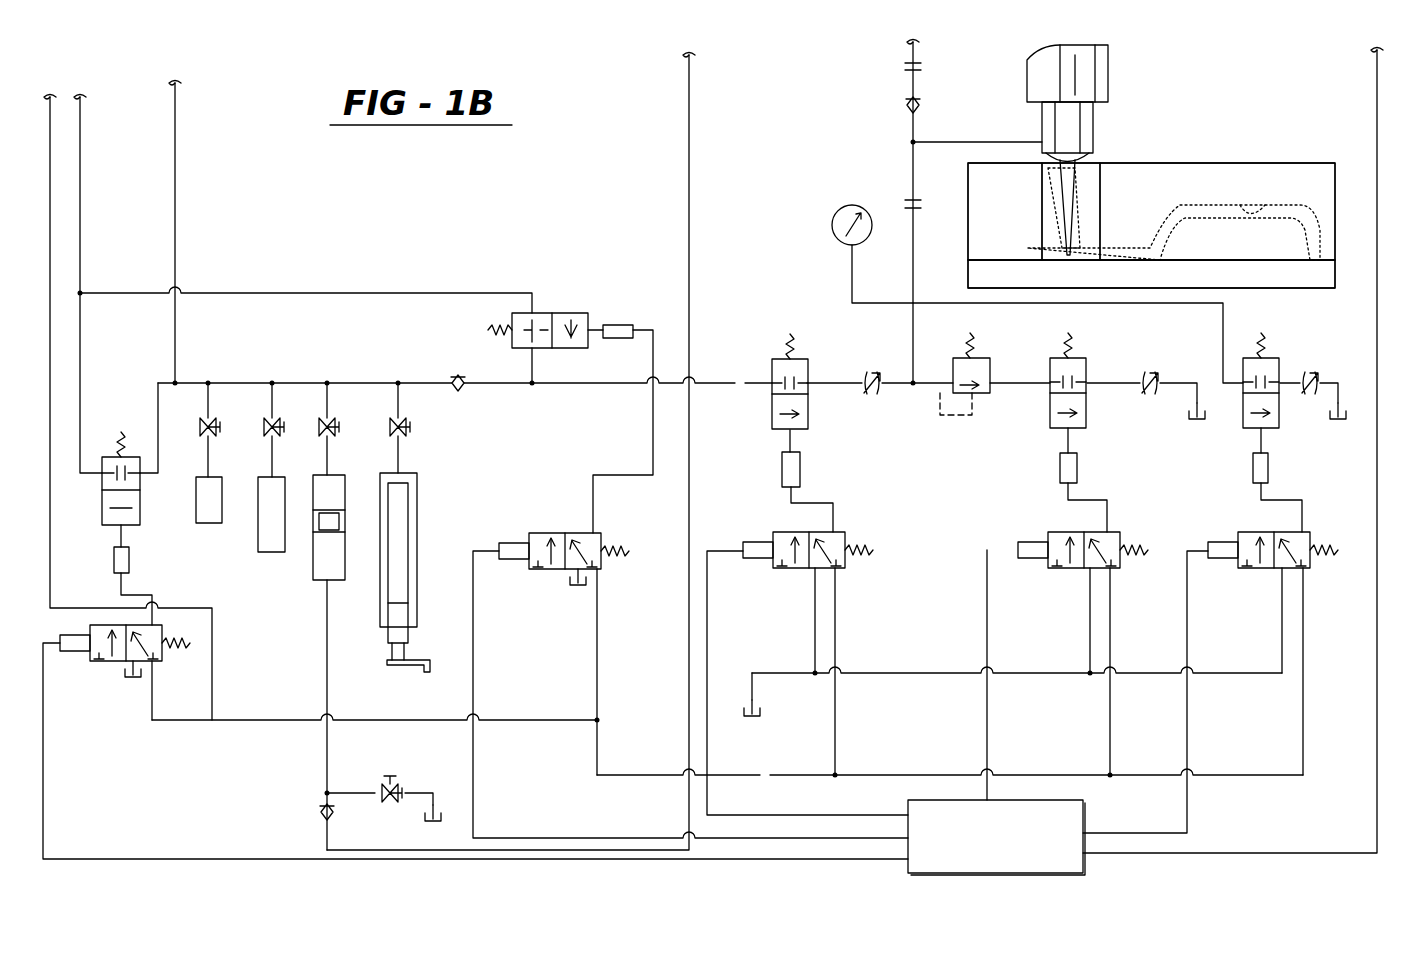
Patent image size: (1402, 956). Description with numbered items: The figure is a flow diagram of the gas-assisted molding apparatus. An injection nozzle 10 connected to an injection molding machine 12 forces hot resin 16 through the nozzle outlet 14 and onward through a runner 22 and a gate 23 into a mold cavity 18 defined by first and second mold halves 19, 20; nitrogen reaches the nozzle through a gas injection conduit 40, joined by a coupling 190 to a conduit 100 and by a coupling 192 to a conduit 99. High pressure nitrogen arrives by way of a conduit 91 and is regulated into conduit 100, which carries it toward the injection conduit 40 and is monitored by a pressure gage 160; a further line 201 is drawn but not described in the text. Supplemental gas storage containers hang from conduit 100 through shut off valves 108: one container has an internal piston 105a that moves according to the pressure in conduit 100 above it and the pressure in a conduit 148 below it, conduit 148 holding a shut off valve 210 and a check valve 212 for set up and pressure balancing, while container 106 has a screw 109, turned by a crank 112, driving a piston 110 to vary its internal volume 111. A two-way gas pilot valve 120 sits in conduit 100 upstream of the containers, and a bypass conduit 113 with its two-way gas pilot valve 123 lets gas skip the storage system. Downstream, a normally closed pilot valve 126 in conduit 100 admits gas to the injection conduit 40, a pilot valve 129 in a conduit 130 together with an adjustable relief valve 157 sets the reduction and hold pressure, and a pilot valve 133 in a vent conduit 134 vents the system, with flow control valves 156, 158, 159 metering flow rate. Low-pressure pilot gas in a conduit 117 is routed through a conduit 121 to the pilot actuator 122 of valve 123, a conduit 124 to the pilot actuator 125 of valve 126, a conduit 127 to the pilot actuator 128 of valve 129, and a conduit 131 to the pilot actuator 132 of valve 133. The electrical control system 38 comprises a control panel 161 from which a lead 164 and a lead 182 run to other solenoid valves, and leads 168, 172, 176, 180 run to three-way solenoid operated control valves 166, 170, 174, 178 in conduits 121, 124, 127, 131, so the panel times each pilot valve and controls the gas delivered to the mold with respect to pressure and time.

The injection nozzle 10 is at (1107, 122).
The injection molding machine 12 is at (1088, 84).
The nozzle outlet 14 is at (1045, 170).
The hot resin 16 is at (1300, 237).
The mold cavity 18 is at (1258, 207).
The first mold half 19 is at (1318, 177).
The second mold half 20 is at (1330, 282).
The runner 22 is at (1120, 245).
The gate 23 is at (1155, 255).
The electrical control system 38 is at (904, 798).
The gas injection conduit 40 is at (913, 94).
The conduit 91 is at (689, 609).
The conduit 99 is at (913, 47).
The conduit 100 is at (80, 178).
The internal piston 105a is at (338, 520).
The gas storage container 106 is at (415, 592).
The shut off valves 108 is at (215, 425).
The screw 109 is at (405, 640).
The piston 110 is at (400, 540).
The volume 111 is at (400, 500).
The crank 112 is at (403, 460).
The bypass conduit 113 is at (405, 293).
The conduit 117 is at (50, 145).
The two-way gas pilot valve 120 is at (137, 445).
The conduit 121 is at (597, 667).
The pilot actuator 122 is at (618, 325).
The two-way gas pilot valve 123 is at (555, 308).
The conduit 124 is at (836, 527).
The pilot actuator 125 is at (800, 470).
The two-way normally closed pilot valve 126 is at (797, 352).
The conduit 127 is at (1108, 520).
The pilot actuator 128 is at (1060, 468).
The two-way normally closed gas pilot valve 129 is at (1097, 363).
The conduit 130 is at (653, 442).
The conduit 131 is at (1303, 717).
The pilot actuator 132 is at (1253, 468).
The two-way normally closed gas pilot valve 133 is at (1294, 436).
The vent conduit 134 is at (1223, 332).
The conduit 148 is at (689, 110).
The flow control valve 156 is at (872, 397).
The adjustable relief valve 157 is at (999, 366).
The flow control valve 158 is at (1152, 372).
The flow control valve 159 is at (1312, 377).
The pressure gage 160 is at (832, 226).
The control panel 161 is at (1083, 817).
The lead 164 is at (43, 832).
The three-way solenoid operated control valve 166 is at (565, 527).
The lead 168 is at (473, 807).
The three-way solenoid operated control valve 170 is at (776, 533).
The lead 172 is at (707, 637).
The three-way solenoid operated control valve 174 is at (1083, 578).
The lead 176 is at (987, 720).
The three-way solenoid operated control valve 178 is at (1251, 521).
The lead 180 is at (1187, 732).
The lead 182 is at (1377, 827).
The coupling 190 is at (910, 202).
The coupling 192 is at (913, 72).
The supply line 201 is at (175, 163).
The shut off valve 210 is at (385, 776).
The check valve 212 is at (315, 821).